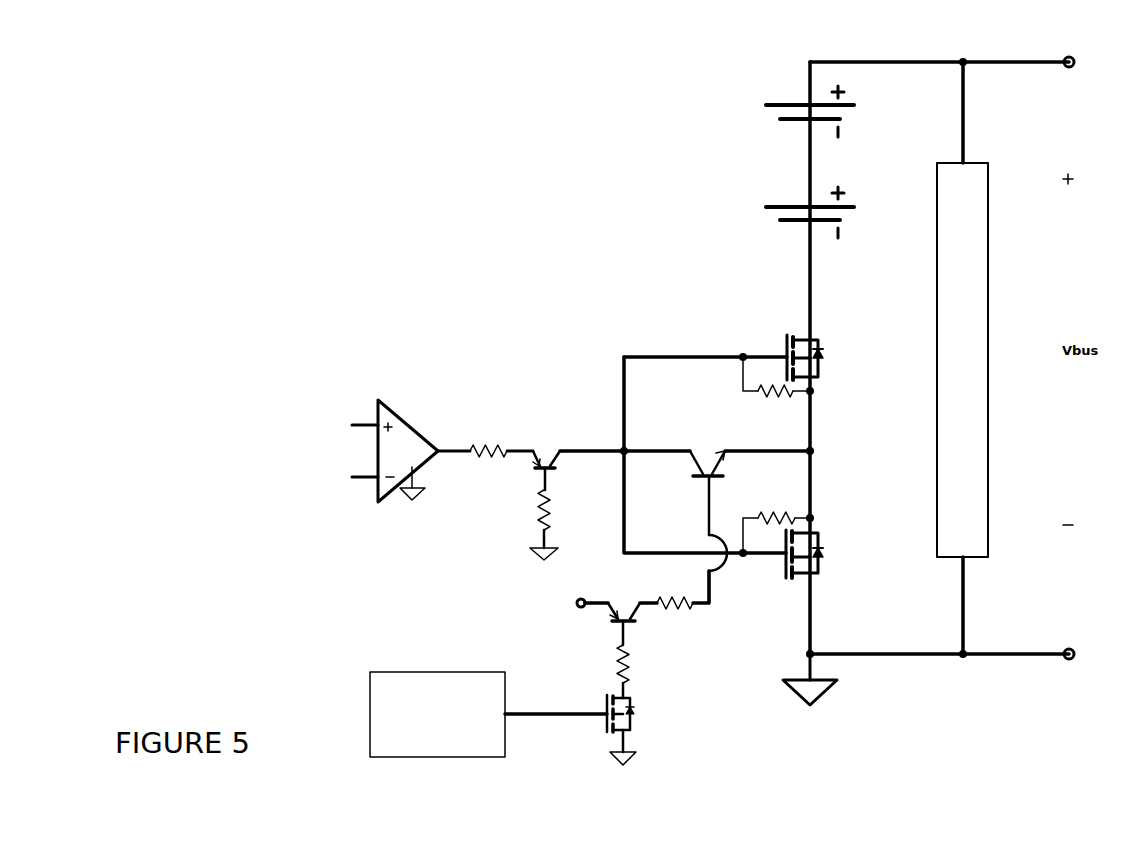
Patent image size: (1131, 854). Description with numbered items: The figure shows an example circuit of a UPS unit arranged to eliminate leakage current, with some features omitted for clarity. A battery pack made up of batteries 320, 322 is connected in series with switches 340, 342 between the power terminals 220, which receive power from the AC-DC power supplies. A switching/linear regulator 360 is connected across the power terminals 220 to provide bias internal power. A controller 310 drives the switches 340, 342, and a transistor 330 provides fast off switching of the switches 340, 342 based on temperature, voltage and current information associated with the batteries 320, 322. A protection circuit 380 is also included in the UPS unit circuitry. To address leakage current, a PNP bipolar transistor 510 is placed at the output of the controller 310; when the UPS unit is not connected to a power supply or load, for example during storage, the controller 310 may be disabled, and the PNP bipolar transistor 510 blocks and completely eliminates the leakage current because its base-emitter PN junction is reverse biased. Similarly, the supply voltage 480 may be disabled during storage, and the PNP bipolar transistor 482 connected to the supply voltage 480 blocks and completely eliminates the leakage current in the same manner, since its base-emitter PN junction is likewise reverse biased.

The power terminals 220 is at (1072, 67).
The controller 310 is at (378, 415).
The battery 320 is at (775, 110).
The battery 322 is at (775, 215).
The transistor 330 is at (690, 462).
The switch 340 is at (825, 367).
The switch 342 is at (825, 560).
The switching/linear regulator 360 is at (988, 430).
The protection circuit 380 is at (370, 730).
The VCC 480 is at (577, 607).
The PNP bipolar transistor 482 is at (612, 612).
The PNP bipolar transistor 510 is at (535, 468).